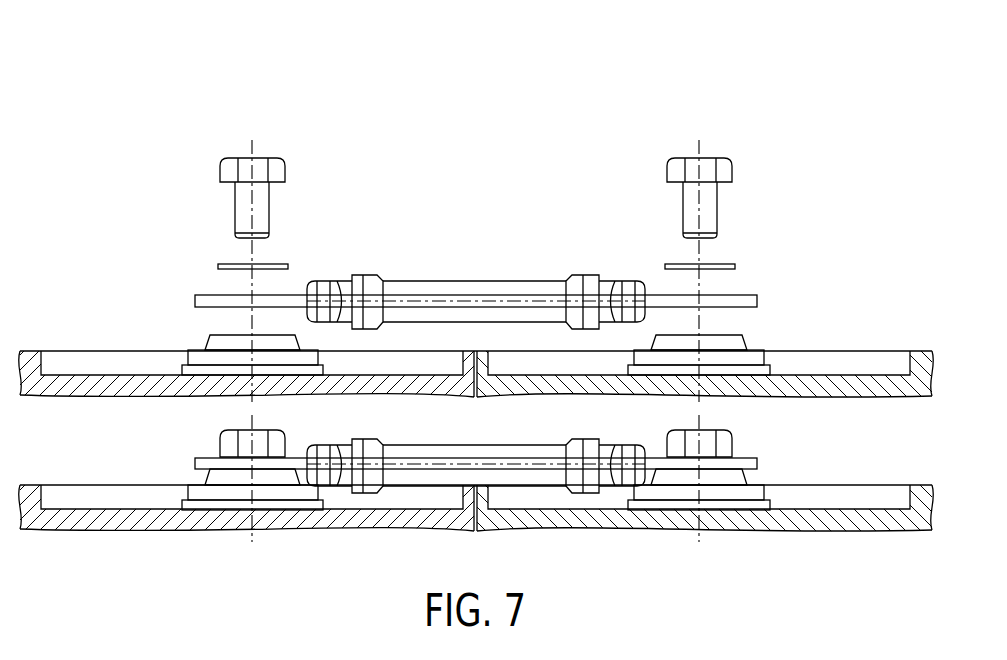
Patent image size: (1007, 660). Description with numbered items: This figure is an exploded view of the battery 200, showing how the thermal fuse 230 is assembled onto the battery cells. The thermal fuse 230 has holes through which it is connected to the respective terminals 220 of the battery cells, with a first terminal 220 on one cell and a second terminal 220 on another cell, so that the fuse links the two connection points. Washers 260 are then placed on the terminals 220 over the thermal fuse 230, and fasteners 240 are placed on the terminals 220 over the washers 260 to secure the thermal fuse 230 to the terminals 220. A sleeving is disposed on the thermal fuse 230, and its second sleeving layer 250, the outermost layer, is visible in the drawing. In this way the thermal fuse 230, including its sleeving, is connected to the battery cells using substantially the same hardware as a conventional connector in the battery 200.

The battery 200 is at (130, 95).
The terminal 220 is at (745, 350).
The thermal fuse 230 is at (757, 300).
The fastener 240 is at (732, 168).
The second sleeving layer 250 is at (475, 280).
The washer 260 is at (735, 266).